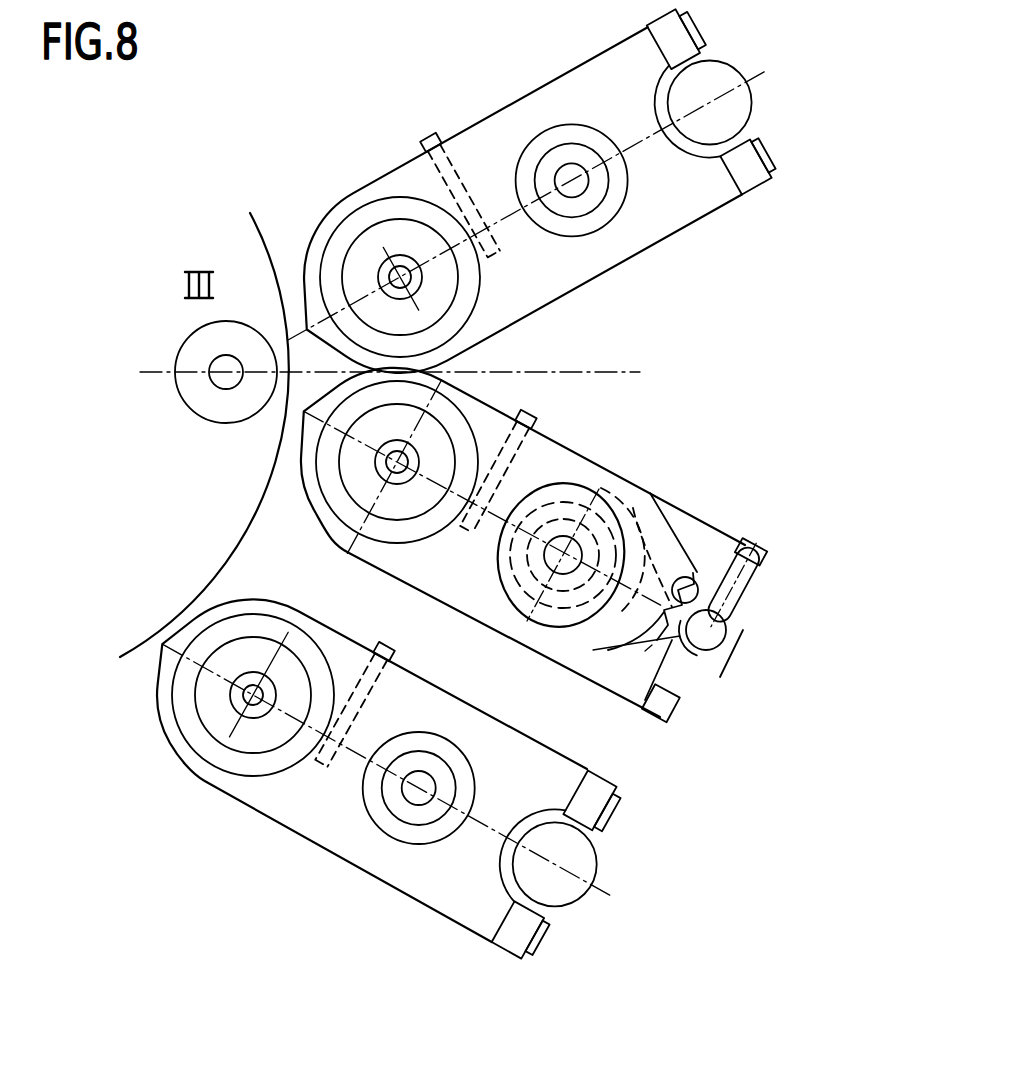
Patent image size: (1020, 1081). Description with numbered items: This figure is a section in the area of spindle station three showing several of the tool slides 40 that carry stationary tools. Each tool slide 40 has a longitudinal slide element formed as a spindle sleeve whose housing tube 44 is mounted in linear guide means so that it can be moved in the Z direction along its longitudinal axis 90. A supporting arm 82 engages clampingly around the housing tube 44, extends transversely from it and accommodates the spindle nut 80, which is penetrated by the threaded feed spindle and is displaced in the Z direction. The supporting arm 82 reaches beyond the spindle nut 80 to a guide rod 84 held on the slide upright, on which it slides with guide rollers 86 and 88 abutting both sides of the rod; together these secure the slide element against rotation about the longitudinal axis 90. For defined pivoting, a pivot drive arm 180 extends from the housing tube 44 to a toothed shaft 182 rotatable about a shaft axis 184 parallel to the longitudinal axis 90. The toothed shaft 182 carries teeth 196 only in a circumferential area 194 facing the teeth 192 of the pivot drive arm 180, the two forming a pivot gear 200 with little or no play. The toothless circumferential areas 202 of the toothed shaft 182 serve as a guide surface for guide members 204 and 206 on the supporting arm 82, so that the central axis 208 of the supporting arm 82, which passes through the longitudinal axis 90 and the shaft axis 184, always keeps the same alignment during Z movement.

The tool slide 40 is at (448, 111).
The housing tube 44 is at (418, 212).
The longitudinal axis 90 is at (398, 268).
The supporting arm 82 is at (517, 123).
The guide rod 84 is at (744, 101).
The guide roller 86 is at (673, 46).
The guide roller 88 is at (750, 171).
The spindle nut 80 is at (670, 607).
The central axis 208 is at (633, 508).
The pivot drive arm 180 is at (688, 560).
The circumferential area 194 is at (700, 574).
The guide member 206 is at (723, 615).
The toothed shaft 182 is at (723, 632).
The toothless circumferential area 202 is at (737, 647).
The shaft axis 184 is at (703, 663).
The guide member 204 is at (690, 685).
The teeth 196 is at (593, 650).
The pivot gear 200 is at (630, 665).
The teeth 192 is at (647, 703).